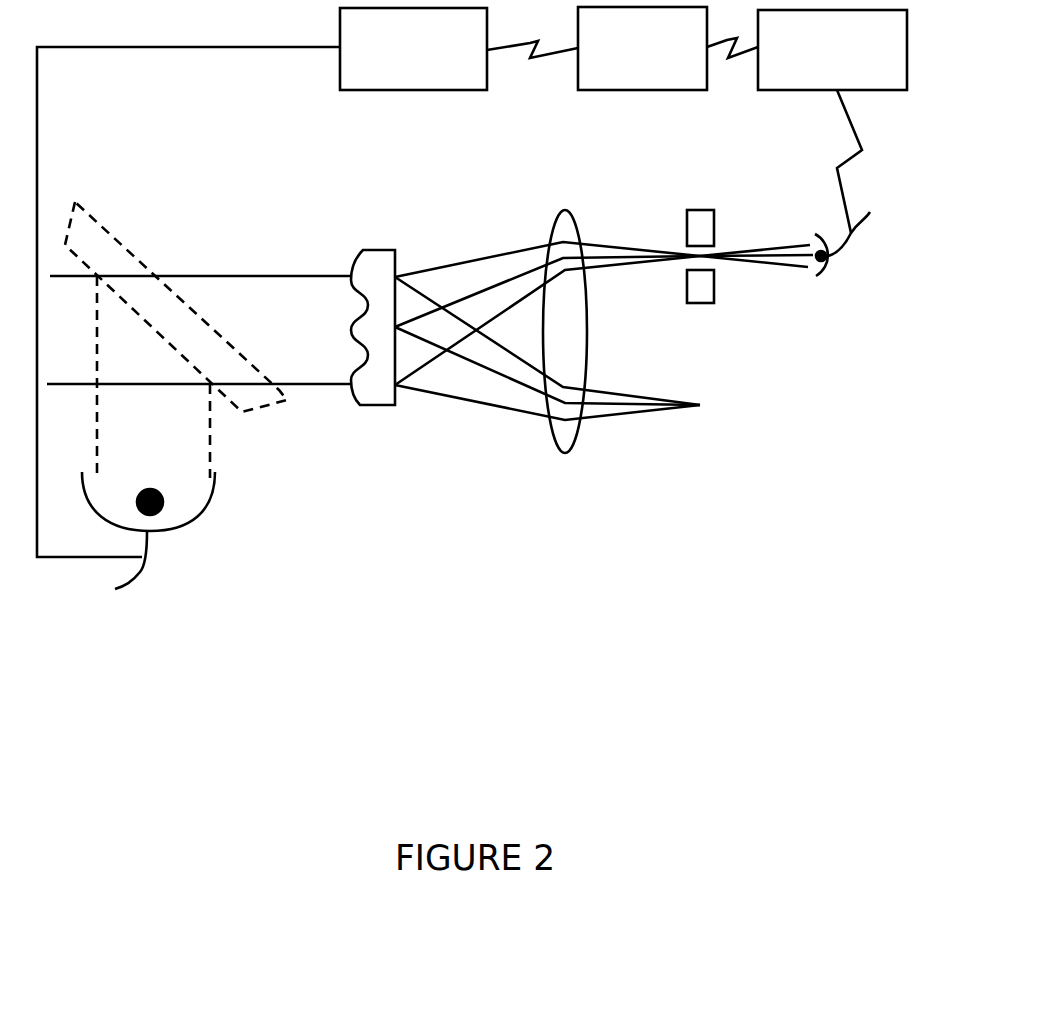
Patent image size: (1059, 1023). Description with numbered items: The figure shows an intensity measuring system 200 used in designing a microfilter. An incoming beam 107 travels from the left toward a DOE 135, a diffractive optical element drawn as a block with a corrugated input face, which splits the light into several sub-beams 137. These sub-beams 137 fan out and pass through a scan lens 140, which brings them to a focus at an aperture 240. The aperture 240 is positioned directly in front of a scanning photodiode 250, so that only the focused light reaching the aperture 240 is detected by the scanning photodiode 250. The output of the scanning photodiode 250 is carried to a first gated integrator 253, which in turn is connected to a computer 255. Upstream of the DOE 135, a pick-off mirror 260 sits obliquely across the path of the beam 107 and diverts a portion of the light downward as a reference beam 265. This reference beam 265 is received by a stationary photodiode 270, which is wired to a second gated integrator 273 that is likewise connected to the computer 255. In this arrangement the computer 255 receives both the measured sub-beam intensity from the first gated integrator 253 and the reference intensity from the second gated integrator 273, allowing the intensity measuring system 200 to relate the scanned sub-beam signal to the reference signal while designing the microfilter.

The intensity measuring system 200 is at (198, 155).
The beam 107 is at (212, 275).
The pick-off mirror 260 is at (113, 233).
The reference beam 265 is at (210, 455).
The stationary photodiode 270 is at (152, 532).
The DOE 135 is at (370, 405).
The sub-beams 137 is at (463, 262).
The scan lens 140 is at (575, 455).
The aperture 240 is at (687, 215).
The scanning photodiode 250 is at (830, 261).
The first gated integrator 253 is at (807, 121).
The computer 255 is at (642, 48).
The second gated integrator 273 is at (459, 49).